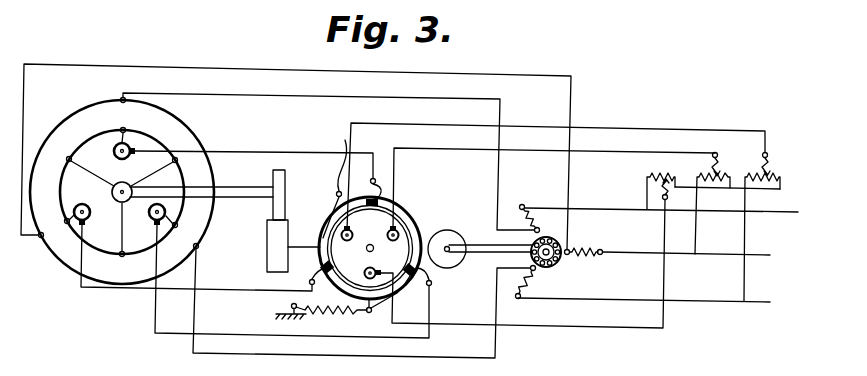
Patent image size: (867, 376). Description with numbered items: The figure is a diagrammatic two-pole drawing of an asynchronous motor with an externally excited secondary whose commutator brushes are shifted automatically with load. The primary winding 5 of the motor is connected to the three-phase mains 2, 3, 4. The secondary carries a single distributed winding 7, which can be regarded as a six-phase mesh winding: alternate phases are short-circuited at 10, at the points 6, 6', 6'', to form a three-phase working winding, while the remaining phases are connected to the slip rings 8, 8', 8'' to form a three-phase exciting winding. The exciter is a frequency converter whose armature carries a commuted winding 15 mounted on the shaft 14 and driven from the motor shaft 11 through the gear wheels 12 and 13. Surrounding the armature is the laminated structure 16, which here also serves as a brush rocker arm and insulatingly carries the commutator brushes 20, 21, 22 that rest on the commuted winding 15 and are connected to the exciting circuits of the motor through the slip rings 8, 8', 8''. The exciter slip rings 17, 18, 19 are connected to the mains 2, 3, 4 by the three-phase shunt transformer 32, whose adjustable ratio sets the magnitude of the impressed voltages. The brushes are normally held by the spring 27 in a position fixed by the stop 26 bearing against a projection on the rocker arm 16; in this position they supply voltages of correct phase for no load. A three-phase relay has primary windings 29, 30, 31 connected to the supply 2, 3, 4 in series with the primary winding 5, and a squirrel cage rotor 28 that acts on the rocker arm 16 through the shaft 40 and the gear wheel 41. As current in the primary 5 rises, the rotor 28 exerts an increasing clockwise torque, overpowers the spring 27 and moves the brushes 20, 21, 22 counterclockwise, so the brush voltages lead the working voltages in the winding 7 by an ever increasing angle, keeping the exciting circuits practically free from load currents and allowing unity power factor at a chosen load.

The three-phase supply line 2 is at (661, 221).
The three-phase supply line 3 is at (688, 265).
The three-phase supply line 4 is at (644, 311).
The three-phase primary winding 5 is at (92, 108).
The short-circuited point 6 is at (163, 170).
The short-circuited point 6' is at (82, 170).
The short-circuited point 6'' is at (118, 241).
The secondary winding 7 is at (75, 148).
The slip ring 8 is at (235, 153).
The slip ring 8' is at (188, 240).
The slip ring 8'' is at (277, 271).
The short-circuit connection 10 is at (126, 186).
The shaft of the asynchronous motor 11 is at (226, 188).
The gear wheel 12 is at (283, 181).
The gear wheel 13 is at (267, 256).
The exciter shaft 14 is at (297, 245).
The commuted winding 15 is at (414, 235).
The laminated structure 16 is at (421, 213).
The exciter slip ring 17 is at (540, 195).
The exciter slip ring 18 is at (549, 192).
The exciter slip ring 19 is at (515, 264).
The commutator brush 20 is at (363, 297).
The commutator brush 21 is at (381, 199).
The commutator brush 22 is at (404, 298).
The stop 26 is at (334, 185).
The spring 27 is at (321, 319).
The squirrel cage rotor 28 is at (556, 263).
The relay primary winding 29 is at (536, 283).
The relay primary winding 30 is at (540, 219).
The relay primary winding 31 is at (584, 242).
The three-phase shunt transformer 32 is at (713, 227).
The shaft 40 is at (490, 244).
The gear wheel 41 is at (454, 268).